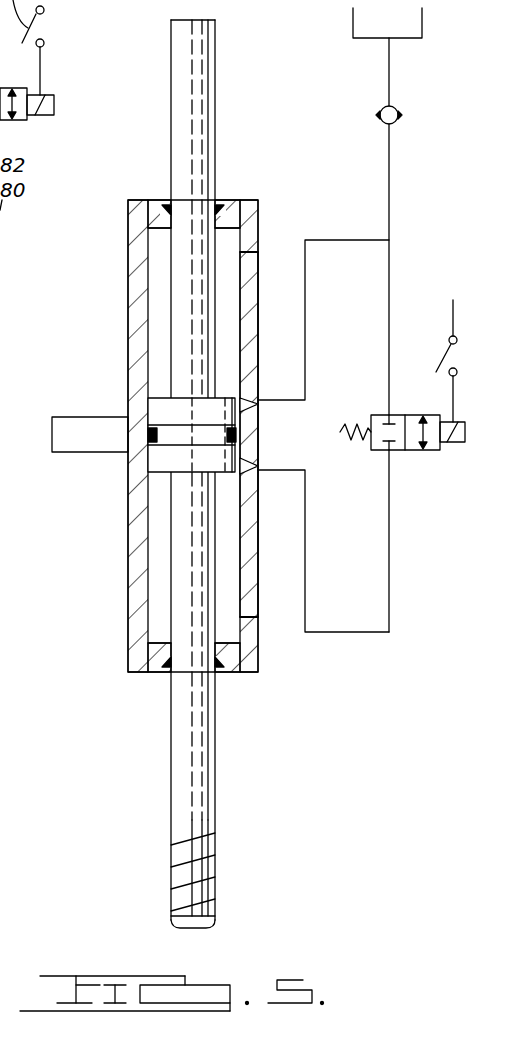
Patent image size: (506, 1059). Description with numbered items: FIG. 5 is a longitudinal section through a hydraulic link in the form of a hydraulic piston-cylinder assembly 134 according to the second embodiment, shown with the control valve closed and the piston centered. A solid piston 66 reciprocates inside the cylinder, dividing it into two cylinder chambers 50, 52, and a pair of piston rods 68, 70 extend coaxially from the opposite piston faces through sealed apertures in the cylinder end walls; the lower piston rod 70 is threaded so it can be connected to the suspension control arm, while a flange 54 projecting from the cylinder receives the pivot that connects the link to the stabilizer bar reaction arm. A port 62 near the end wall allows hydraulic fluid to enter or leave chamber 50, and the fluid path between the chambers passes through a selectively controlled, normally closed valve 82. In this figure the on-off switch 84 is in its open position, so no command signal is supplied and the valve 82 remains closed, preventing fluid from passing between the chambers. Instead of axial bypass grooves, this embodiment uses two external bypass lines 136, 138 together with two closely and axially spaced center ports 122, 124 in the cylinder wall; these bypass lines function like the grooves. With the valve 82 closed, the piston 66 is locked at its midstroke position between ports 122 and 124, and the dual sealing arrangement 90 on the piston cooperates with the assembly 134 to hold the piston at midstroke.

The cylinder chamber 50 is at (157, 285).
The cylinder chamber 52 is at (157, 590).
The flange 54 is at (78, 430).
The port 62 is at (258, 232).
The piston 66 is at (176, 480).
The piston rod 68 is at (180, 81).
The piston rod 70 is at (178, 745).
The valve 82 is at (413, 452).
The on-off switch 84 is at (446, 356).
The sealing arrangement 90 is at (148, 450).
The center port 122 is at (250, 404).
The center port 124 is at (250, 468).
The hydraulic piston-cylinder assembly 134 is at (316, 716).
The external bypass line 136 is at (306, 322).
The external bypass line 138 is at (306, 553).